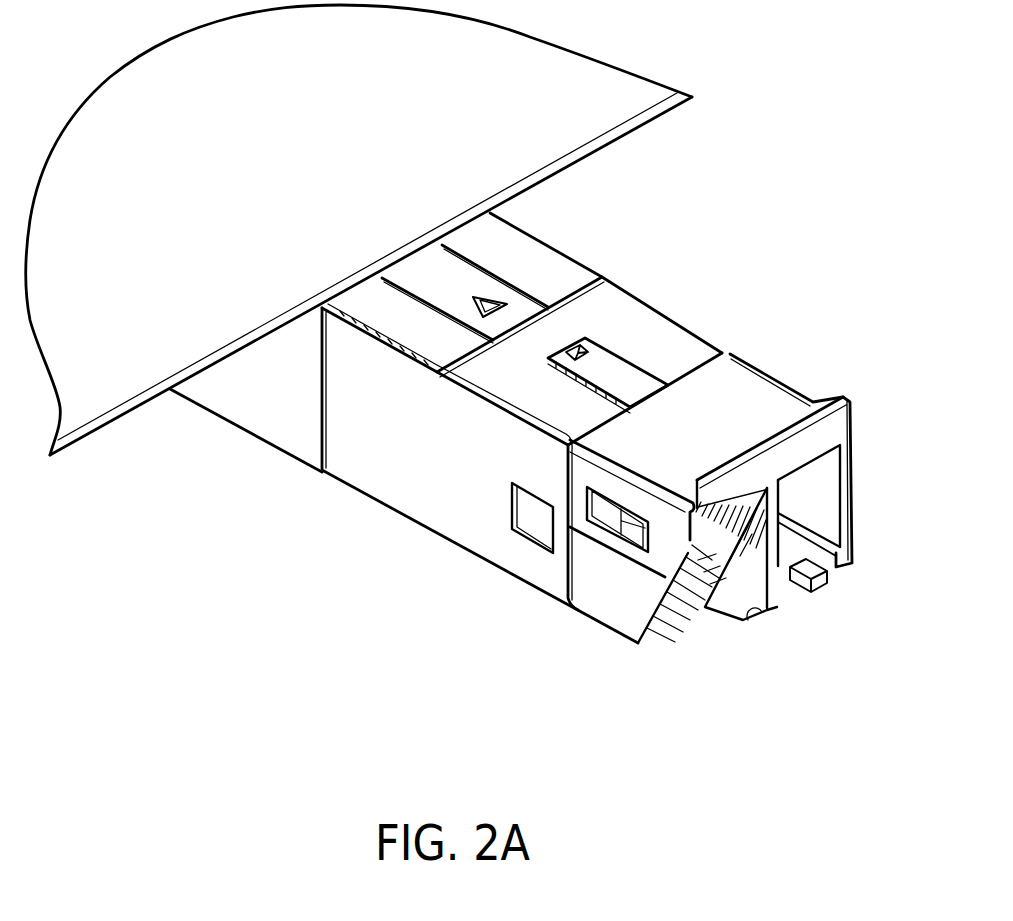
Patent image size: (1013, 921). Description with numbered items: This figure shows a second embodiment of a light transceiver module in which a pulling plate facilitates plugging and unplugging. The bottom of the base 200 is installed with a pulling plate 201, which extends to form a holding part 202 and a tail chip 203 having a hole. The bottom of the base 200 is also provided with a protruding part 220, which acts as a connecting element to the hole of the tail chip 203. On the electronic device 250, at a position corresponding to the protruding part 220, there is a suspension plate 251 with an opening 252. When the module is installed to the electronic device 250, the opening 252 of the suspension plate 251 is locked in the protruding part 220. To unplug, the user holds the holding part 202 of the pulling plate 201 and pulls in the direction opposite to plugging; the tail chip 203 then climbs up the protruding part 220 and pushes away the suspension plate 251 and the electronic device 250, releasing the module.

The base 200 is at (604, 630).
The pulling plate 201 is at (732, 392).
The holding part 202 is at (790, 438).
The tail chip 203 is at (622, 378).
The protruding part 220 is at (585, 342).
The electronic device 250 is at (265, 418).
The suspension plate 251 is at (457, 280).
The opening 252 is at (490, 300).